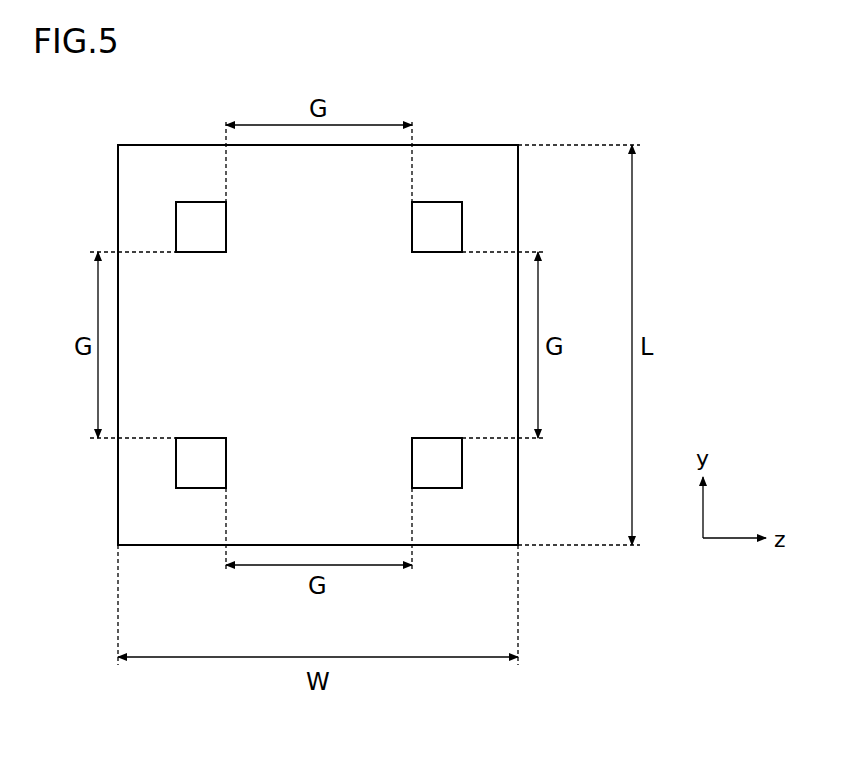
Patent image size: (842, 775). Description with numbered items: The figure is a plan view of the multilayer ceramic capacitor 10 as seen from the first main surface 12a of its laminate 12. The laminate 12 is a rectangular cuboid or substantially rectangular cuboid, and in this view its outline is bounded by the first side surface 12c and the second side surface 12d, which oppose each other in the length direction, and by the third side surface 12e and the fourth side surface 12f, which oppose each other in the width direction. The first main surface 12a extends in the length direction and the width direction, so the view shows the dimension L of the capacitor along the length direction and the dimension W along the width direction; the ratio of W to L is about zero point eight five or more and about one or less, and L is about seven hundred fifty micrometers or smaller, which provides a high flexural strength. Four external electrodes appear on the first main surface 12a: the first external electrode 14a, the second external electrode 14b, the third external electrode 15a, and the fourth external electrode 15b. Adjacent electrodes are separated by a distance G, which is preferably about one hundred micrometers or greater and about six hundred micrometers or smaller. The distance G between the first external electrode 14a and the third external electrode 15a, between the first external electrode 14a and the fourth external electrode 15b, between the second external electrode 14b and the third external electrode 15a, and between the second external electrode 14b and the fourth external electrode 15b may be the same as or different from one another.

The multilayer ceramic capacitor 10 is at (531, 128).
The laminate 12 is at (160, 553).
The first main surface 12a is at (437, 172).
The first side surface 12c is at (165, 144).
The second side surface 12d is at (470, 547).
The third side surface 12e is at (519, 181).
The fourth side surface 12f is at (118, 512).
The first external electrode 14a is at (447, 229).
The second external electrode 14b is at (190, 462).
The third external electrode 15a is at (188, 225).
The fourth external electrode 15b is at (448, 465).